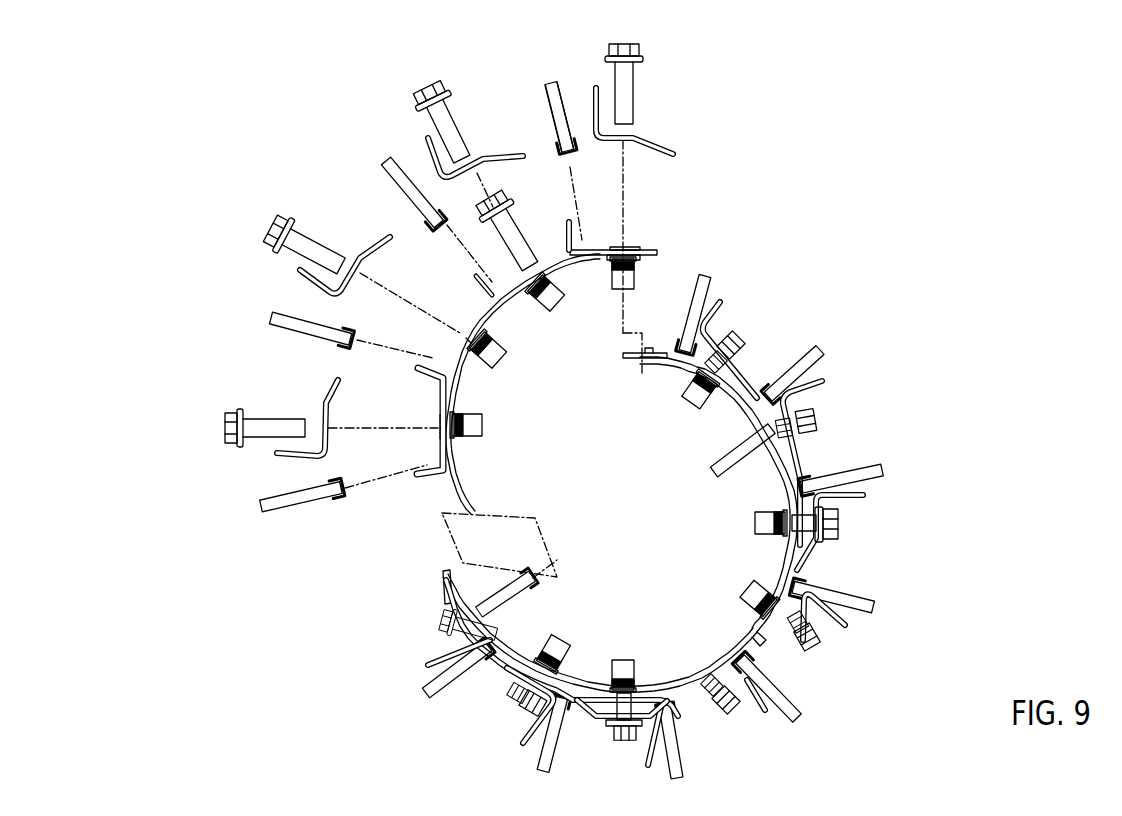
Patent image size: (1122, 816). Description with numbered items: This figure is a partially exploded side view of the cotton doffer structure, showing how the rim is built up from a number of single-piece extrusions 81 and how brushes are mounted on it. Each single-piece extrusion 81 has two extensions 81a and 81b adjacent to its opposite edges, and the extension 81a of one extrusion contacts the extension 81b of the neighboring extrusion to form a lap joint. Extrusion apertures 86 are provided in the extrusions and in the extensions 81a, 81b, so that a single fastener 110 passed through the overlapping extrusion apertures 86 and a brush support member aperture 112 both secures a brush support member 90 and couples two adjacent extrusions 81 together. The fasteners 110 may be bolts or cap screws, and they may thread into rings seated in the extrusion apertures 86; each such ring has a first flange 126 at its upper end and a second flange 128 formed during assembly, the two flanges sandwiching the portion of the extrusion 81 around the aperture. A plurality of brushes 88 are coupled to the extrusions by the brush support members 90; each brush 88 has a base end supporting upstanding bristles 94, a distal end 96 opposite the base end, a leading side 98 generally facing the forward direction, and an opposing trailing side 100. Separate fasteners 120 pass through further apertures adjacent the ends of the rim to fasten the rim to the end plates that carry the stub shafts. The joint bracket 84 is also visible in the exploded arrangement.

The single-piece extrusion 81 is at (518, 374).
The extension 81a is at (652, 250).
The extension 81b is at (625, 358).
The joint bracket 84 is at (427, 371).
The extrusion aperture 86 is at (658, 348).
The brush 88 is at (526, 119).
The brush support member 90 is at (746, 301).
The bristles 94 is at (552, 103).
The distal end 96 is at (559, 158).
The leading side 98 is at (560, 125).
The trailing side 100 is at (550, 131).
The fastener 110 is at (628, 50).
The brush support member aperture 112 is at (640, 128).
The fastener 120 is at (520, 250).
The first flange 126 is at (464, 340).
The second flange 128 is at (560, 285).